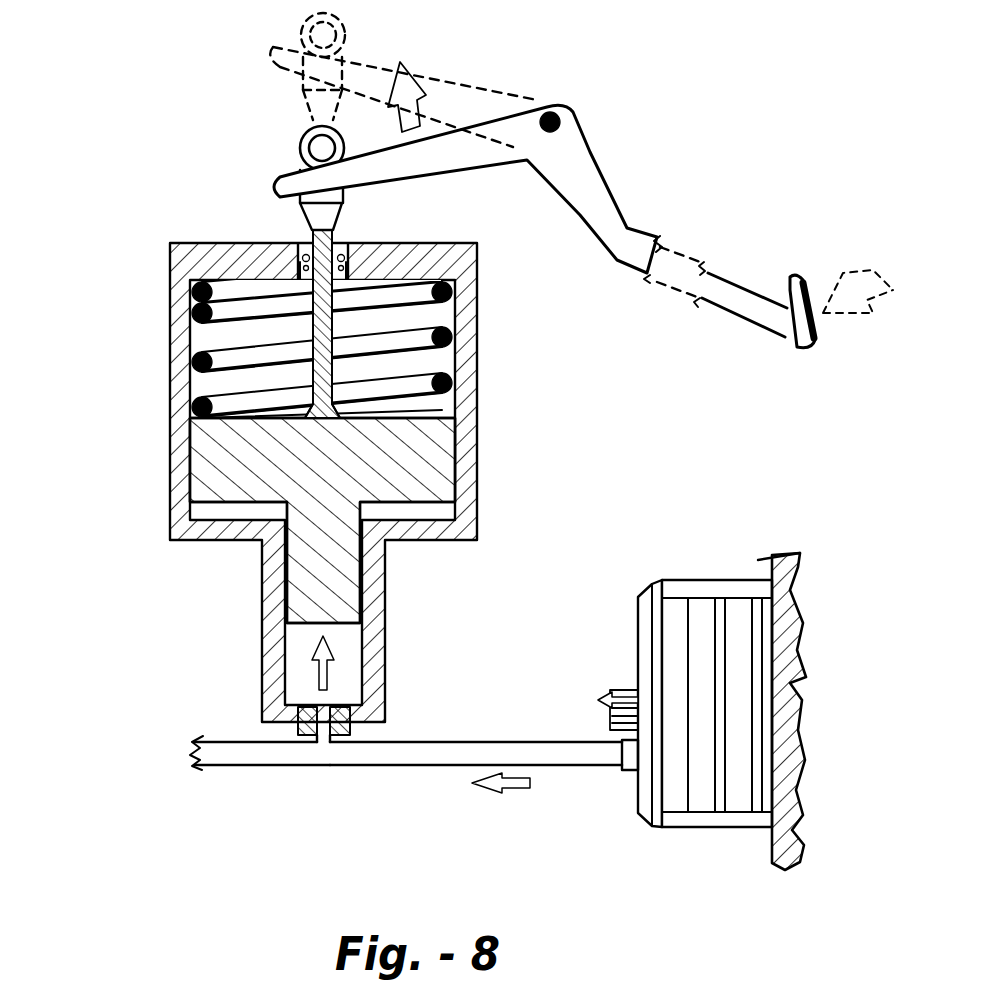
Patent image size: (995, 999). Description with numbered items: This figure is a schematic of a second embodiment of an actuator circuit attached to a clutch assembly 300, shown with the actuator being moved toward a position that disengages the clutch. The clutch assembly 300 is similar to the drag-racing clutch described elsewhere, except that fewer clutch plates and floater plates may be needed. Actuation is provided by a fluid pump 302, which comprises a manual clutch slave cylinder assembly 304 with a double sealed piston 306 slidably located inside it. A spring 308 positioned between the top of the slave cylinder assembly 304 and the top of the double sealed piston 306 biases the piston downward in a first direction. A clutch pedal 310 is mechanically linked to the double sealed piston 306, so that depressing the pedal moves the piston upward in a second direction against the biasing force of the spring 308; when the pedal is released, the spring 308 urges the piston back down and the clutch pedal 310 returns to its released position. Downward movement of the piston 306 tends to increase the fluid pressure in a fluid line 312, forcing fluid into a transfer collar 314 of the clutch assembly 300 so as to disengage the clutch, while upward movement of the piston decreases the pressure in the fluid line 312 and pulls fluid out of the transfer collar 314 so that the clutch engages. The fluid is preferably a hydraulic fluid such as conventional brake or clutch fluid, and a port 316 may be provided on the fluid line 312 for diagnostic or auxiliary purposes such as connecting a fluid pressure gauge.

The clutch assembly 300 is at (697, 744).
The fluid pump 302 is at (311, 430).
The manual clutch slave cylinder assembly 304 is at (180, 522).
The double sealed piston 306 is at (443, 463).
The spring 308 is at (405, 343).
The clutch pedal 310 is at (790, 300).
The fluid line 312 is at (382, 787).
The transfer collar 314 is at (645, 805).
The port 316 is at (222, 752).